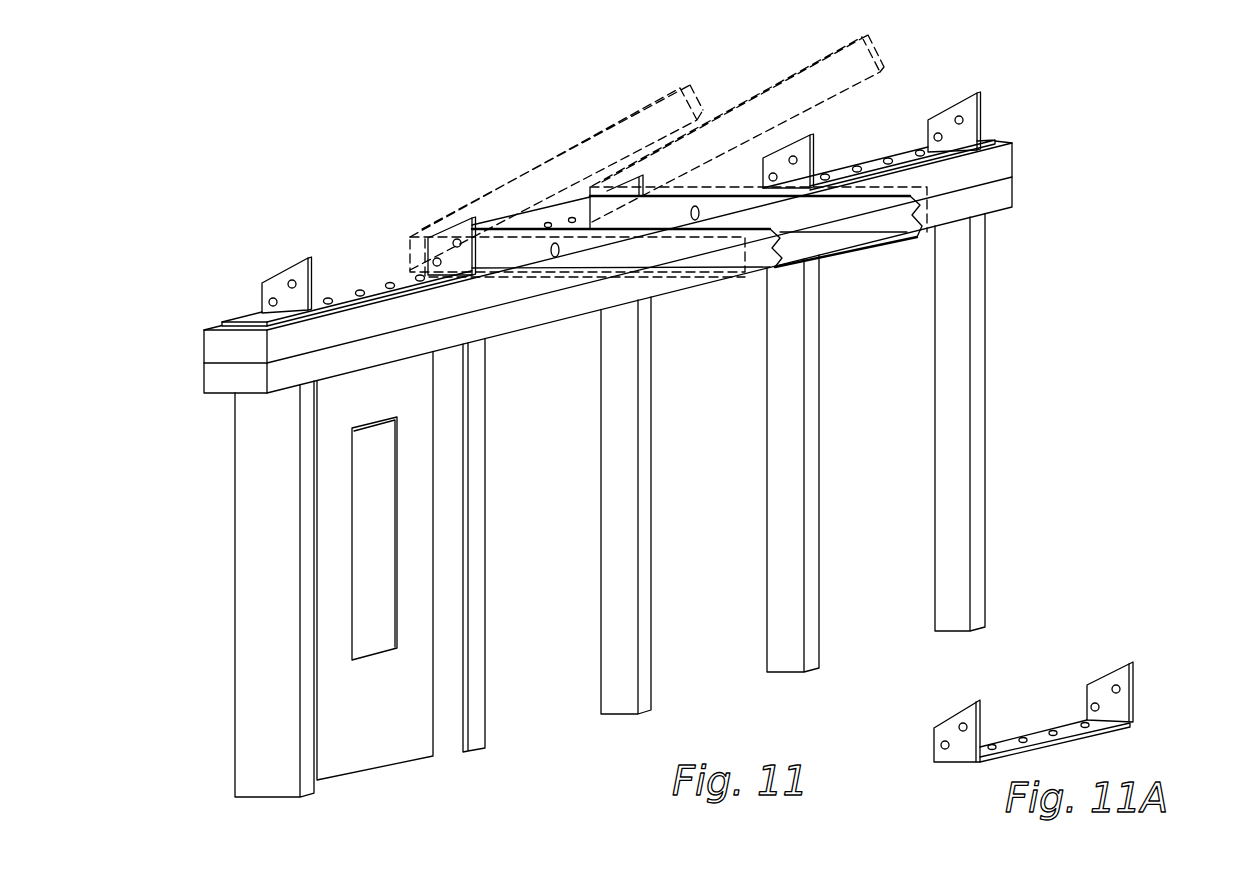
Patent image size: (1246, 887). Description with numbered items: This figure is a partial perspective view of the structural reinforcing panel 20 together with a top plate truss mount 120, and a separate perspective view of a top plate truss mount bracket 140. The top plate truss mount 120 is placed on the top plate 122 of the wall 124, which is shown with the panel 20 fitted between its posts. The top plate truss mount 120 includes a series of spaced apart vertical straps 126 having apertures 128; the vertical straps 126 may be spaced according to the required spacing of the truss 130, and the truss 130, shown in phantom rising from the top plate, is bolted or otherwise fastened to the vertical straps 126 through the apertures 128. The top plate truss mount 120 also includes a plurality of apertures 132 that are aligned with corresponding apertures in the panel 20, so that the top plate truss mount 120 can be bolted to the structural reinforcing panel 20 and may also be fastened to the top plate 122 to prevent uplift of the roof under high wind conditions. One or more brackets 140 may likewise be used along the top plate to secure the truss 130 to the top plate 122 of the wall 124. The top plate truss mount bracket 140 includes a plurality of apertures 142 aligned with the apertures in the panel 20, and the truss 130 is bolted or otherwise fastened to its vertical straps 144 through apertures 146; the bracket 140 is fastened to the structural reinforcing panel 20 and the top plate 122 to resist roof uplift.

In FIG. 11, the structural reinforcing panel 20 is at (390, 748).
In FIG. 11, the top plate truss mount 120 is at (548, 214).
In FIG. 11, the top plate 122 is at (212, 346).
In FIG. 11, the wall 124 is at (258, 449).
In FIG. 11, the vertical straps 126 is at (302, 264).
In FIG. 11, the apertures 128 is at (290, 283).
In FIG. 11, the truss 130 is at (772, 105).
In FIG. 11, the apertures 132 is at (393, 278).
In FIG. 11A, the top plate truss mount bracket 140 is at (1071, 673).
In FIG. 11A, the apertures 142 is at (1025, 733).
In FIG. 11A, the vertical straps 144 is at (1137, 673).
In FIG. 11A, the apertures 146 is at (1095, 704).